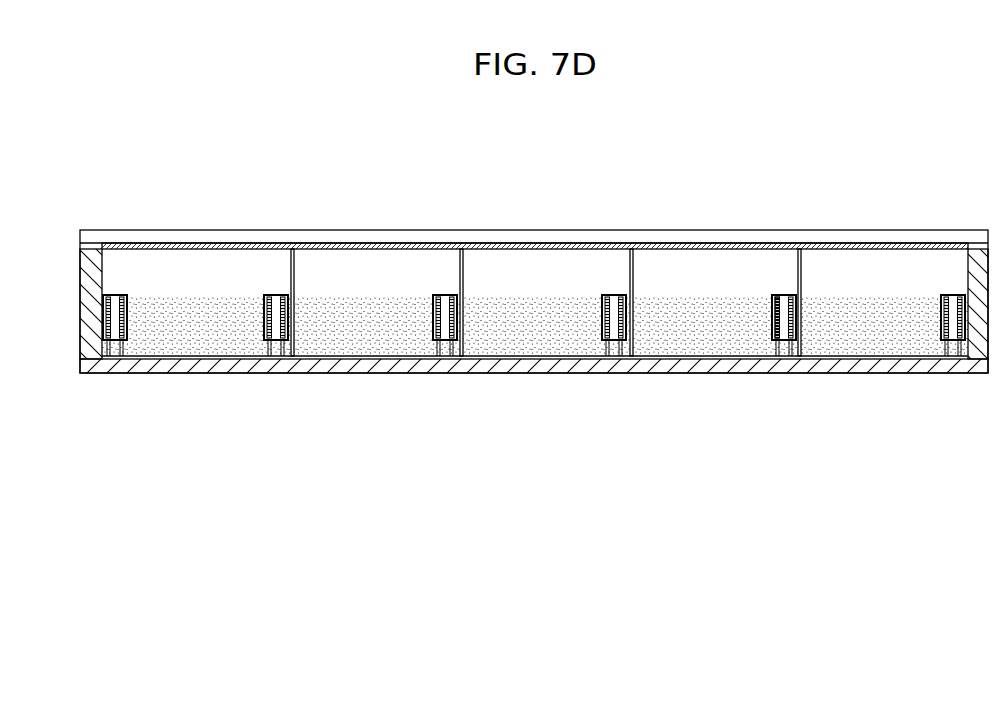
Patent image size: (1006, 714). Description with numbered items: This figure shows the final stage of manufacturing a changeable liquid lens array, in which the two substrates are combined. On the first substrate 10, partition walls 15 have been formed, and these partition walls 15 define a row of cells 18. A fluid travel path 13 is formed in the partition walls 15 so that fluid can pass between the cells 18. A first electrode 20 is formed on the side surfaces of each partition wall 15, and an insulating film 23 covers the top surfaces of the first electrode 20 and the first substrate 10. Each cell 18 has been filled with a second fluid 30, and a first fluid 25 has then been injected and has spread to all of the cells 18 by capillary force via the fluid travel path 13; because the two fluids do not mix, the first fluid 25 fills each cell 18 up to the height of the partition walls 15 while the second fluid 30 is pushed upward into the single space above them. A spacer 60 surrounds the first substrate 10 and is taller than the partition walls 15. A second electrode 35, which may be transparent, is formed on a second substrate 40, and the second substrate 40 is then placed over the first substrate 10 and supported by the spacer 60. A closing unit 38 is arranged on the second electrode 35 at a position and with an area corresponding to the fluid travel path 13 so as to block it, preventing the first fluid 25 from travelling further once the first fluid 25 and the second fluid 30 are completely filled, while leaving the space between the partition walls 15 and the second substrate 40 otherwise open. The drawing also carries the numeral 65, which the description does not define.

The first substrate 10 is at (873, 368).
The fluid travel path 13 is at (613, 354).
The partition wall 15 is at (782, 340).
The cell 18 is at (292, 379).
The first electrode 20 is at (769, 339).
The insulating film 23 is at (773, 318).
The first fluid 25 is at (535, 340).
The second fluid 30 is at (702, 265).
The second electrode 35 is at (855, 247).
The closing unit 38 is at (465, 272).
The second substrate 40 is at (903, 235).
The spacer 60 is at (980, 262).
The partition wall 65 is at (799, 268).